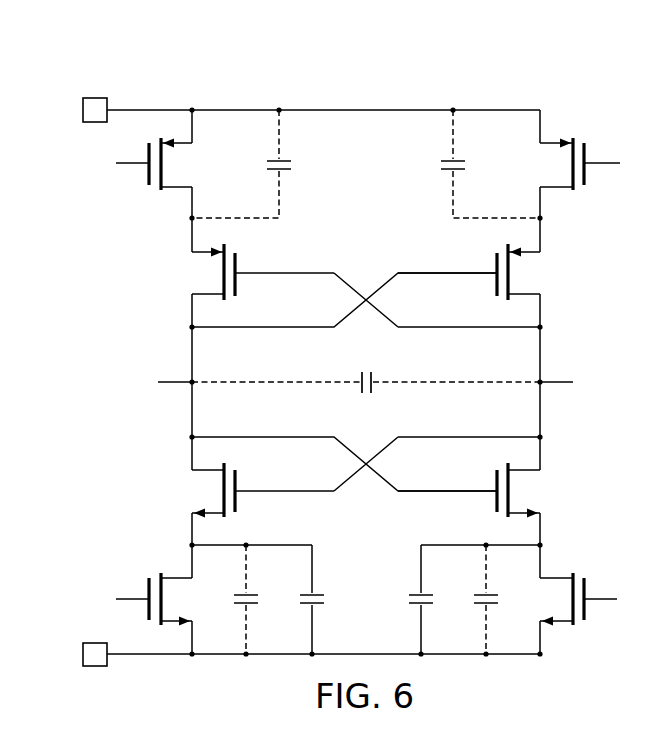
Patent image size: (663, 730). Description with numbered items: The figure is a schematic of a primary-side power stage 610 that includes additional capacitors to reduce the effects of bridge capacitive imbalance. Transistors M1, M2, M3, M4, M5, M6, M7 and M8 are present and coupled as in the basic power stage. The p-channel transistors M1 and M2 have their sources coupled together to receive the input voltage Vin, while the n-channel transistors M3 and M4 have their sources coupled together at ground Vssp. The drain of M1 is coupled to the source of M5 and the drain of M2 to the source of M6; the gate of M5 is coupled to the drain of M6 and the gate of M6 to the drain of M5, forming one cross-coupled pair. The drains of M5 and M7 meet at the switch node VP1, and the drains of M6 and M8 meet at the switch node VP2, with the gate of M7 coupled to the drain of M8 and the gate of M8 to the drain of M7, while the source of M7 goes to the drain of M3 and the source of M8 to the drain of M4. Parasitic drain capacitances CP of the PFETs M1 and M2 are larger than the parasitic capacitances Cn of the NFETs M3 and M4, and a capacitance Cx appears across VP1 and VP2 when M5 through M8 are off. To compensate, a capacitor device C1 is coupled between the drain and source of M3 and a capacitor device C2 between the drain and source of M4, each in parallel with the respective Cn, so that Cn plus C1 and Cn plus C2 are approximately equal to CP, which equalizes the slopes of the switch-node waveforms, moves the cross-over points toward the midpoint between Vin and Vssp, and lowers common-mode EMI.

The primary-side power stage 610 is at (210, 64).
The transistor M1 is at (168, 164).
The transistor M2 is at (567, 164).
The transistor M3 is at (168, 599).
The transistor M4 is at (566, 599).
The transistor M5 is at (250, 272).
The transistor M6 is at (483, 272).
The transistor M7 is at (250, 490).
The transistor M8 is at (483, 490).
The parasitic capacitance CP is at (366, 164).
The parasitic capacitance Cn is at (366, 599).
The capacitor device C1 is at (326, 599).
The capacitor device C2 is at (407, 599).
The capacitance Cx is at (366, 369).
The switch node VP1 is at (155, 382).
The switch node VP2 is at (578, 382).
The input voltage Vin is at (78, 110).
The ground Vssp is at (71, 654).